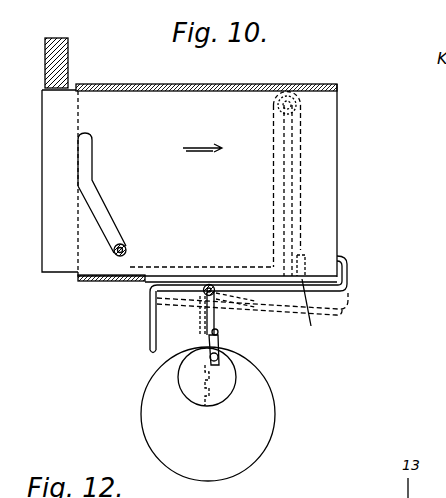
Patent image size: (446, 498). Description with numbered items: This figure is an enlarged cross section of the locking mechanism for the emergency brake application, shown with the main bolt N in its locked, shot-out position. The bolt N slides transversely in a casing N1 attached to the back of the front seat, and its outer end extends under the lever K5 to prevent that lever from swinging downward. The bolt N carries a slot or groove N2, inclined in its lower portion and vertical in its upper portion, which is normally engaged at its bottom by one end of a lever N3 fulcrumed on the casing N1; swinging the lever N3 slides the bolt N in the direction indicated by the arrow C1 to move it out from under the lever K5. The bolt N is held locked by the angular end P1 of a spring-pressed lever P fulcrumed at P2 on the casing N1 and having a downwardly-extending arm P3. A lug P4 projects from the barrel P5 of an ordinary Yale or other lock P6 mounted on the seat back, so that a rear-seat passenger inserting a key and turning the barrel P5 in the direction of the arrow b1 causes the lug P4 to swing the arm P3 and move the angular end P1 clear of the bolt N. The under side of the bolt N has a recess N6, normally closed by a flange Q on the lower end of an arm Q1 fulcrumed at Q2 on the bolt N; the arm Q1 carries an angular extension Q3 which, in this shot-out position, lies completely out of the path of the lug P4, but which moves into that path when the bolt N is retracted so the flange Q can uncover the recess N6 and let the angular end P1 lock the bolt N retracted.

The lever K5 is at (68, 57).
The bolt N is at (327, 174).
The casing N1 is at (311, 85).
The slot or groove N2 is at (107, 223).
The lever N3 is at (127, 250).
The recess N6 is at (303, 258).
The direction of movement C1 is at (202, 138).
The flange Q is at (313, 313).
The arm Q1 is at (290, 201).
The fulcrum Q2 is at (293, 109).
The angular extension Q3 is at (154, 316).
The spring-pressed lever P is at (277, 293).
The angular end P1 is at (346, 270).
The fulcrum P2 is at (205, 293).
The downwardly-extending arm P3 is at (207, 320).
The lug P4 is at (219, 333).
The barrel P5 is at (232, 375).
The lock P6 is at (147, 410).
The arrow b1 is at (231, 335).